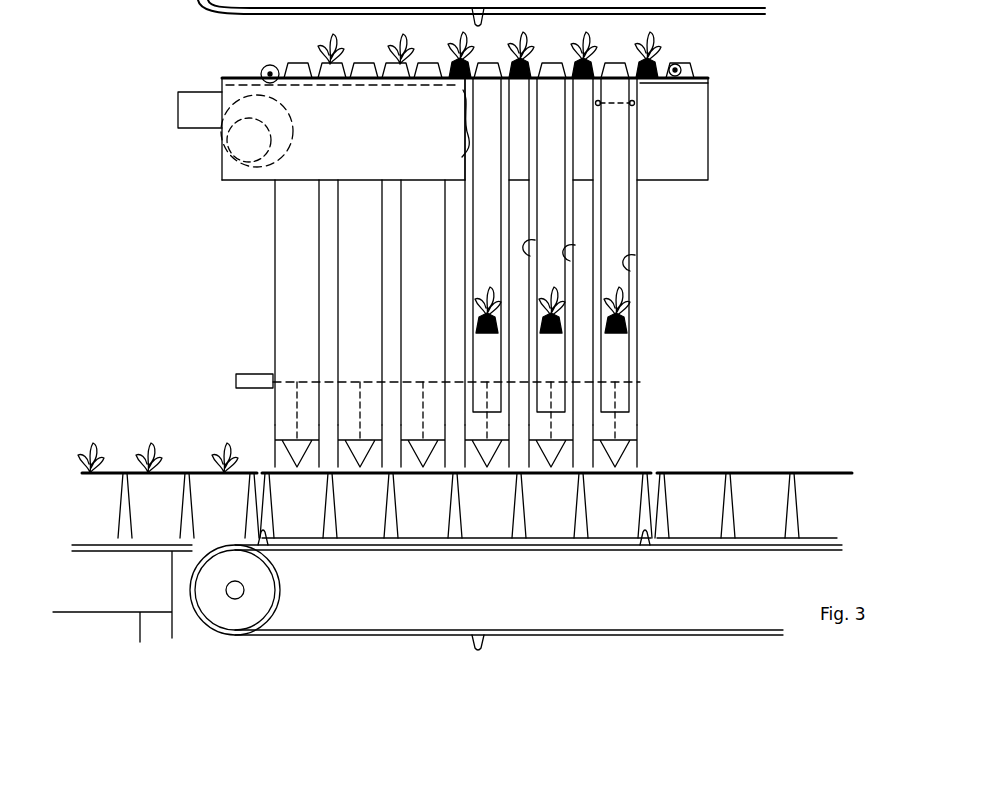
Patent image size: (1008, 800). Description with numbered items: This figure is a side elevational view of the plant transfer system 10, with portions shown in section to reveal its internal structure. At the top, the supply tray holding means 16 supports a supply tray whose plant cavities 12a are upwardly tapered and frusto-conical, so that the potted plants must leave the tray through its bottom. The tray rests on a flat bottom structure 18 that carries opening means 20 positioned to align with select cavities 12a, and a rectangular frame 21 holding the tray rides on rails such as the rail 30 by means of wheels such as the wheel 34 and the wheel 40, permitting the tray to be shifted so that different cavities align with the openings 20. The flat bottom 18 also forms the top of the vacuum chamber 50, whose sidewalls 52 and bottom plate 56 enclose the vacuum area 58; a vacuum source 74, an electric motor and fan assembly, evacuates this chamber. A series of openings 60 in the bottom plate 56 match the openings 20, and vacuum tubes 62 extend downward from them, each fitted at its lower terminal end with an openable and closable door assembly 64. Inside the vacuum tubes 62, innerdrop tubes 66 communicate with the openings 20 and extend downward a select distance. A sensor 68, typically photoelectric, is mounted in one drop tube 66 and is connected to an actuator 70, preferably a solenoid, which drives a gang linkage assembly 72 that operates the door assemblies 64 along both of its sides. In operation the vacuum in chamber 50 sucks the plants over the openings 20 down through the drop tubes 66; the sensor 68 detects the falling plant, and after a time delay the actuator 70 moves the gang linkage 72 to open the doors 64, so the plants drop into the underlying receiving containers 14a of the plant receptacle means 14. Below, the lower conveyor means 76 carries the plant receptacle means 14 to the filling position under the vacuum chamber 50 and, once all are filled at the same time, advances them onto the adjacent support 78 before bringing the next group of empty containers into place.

The plant transfer system 10 is at (732, 151).
The plant cavities 12a is at (666, 60).
The plant receptacle means 14 is at (116, 441).
The receiving containers 14a is at (812, 493).
The supply tray holding means 16 is at (266, 45).
The flat bottom structure 18 is at (556, 62).
The opening means 20 is at (464, 90).
The rectangular frame 21 is at (681, 70).
The rail 30 is at (225, 81).
The wheel 34 is at (700, 78).
The wheel 40 is at (262, 70).
The vacuum chamber 50 is at (222, 187).
The sidewalls 52 is at (448, 150).
The bottom plate 56 is at (655, 214).
The vacuum area 58 is at (686, 160).
The openings 60 is at (548, 176).
The vacuum tubes 62 is at (302, 253).
The door assembly 64 is at (273, 455).
The innerdrop tubes 66 is at (575, 255).
The sensor 68 is at (634, 104).
The actuator 70 is at (252, 375).
The gang linkage assembly 72 is at (328, 380).
The vacuum source 74 is at (205, 115).
The lower conveyor means 76 is at (458, 651).
The adjacent support 78 is at (128, 590).